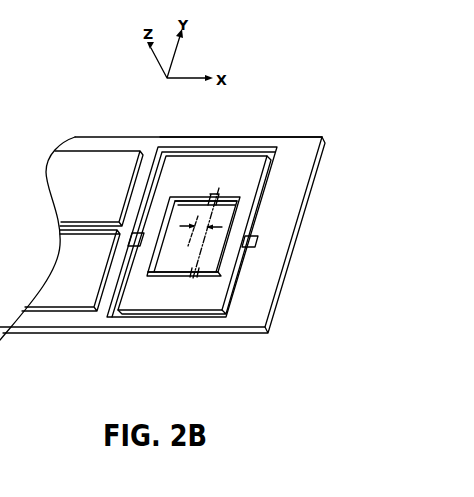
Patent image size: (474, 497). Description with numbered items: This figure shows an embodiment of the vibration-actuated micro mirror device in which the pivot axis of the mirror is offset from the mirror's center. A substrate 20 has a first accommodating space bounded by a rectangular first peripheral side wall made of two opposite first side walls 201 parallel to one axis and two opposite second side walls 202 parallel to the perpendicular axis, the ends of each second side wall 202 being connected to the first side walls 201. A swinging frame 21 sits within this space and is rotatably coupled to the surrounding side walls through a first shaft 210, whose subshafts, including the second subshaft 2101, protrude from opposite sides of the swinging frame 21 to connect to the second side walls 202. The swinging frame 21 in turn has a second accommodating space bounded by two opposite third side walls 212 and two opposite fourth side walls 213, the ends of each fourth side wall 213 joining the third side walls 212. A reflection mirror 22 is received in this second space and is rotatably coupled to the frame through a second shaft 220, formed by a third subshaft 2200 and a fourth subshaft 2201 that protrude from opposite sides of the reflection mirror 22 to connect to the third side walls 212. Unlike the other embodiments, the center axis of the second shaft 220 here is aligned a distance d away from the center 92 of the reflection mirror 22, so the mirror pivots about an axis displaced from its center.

The substrate 20 is at (86, 134).
The first side wall 201 is at (257, 140).
The second side wall 202 is at (108, 314).
The swinging frame 21 is at (216, 308).
The reflection mirror 22 is at (187, 260).
The third side wall 212 is at (186, 198).
The fourth side wall 213 is at (152, 270).
The center of the reflection mirror 92 is at (194, 233).
The distance d is at (201, 219).
The second shaft 220 is at (269, 218).
The fourth subshaft 2201 is at (217, 198).
The third subshaft 2200 is at (198, 270).
The first shaft 210 is at (195, 323).
The second subshaft 2101 is at (135, 248).